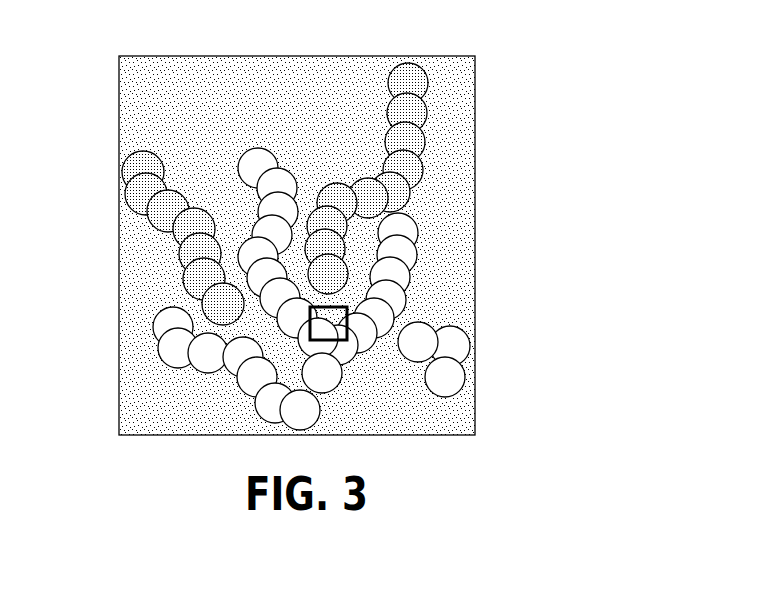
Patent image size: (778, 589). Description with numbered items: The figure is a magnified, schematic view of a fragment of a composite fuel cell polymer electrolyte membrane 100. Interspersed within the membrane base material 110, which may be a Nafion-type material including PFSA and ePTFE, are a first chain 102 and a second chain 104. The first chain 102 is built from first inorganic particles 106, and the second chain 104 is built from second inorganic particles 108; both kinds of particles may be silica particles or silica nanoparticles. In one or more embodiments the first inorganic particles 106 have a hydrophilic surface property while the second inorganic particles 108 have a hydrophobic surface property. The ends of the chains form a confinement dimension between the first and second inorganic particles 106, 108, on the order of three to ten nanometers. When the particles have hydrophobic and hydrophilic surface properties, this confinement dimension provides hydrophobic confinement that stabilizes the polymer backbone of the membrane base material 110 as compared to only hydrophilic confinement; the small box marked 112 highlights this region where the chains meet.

The composite fuel cell polymer electrolyte membrane 100 is at (325, 240).
The first chain 102 is at (135, 154).
The second chain 104 is at (460, 328).
The first inorganic particles 106 is at (427, 148).
The second inorganic particles 108 is at (160, 333).
The membrane base material 110 is at (468, 229).
The particle contact junction 112 is at (314, 336).